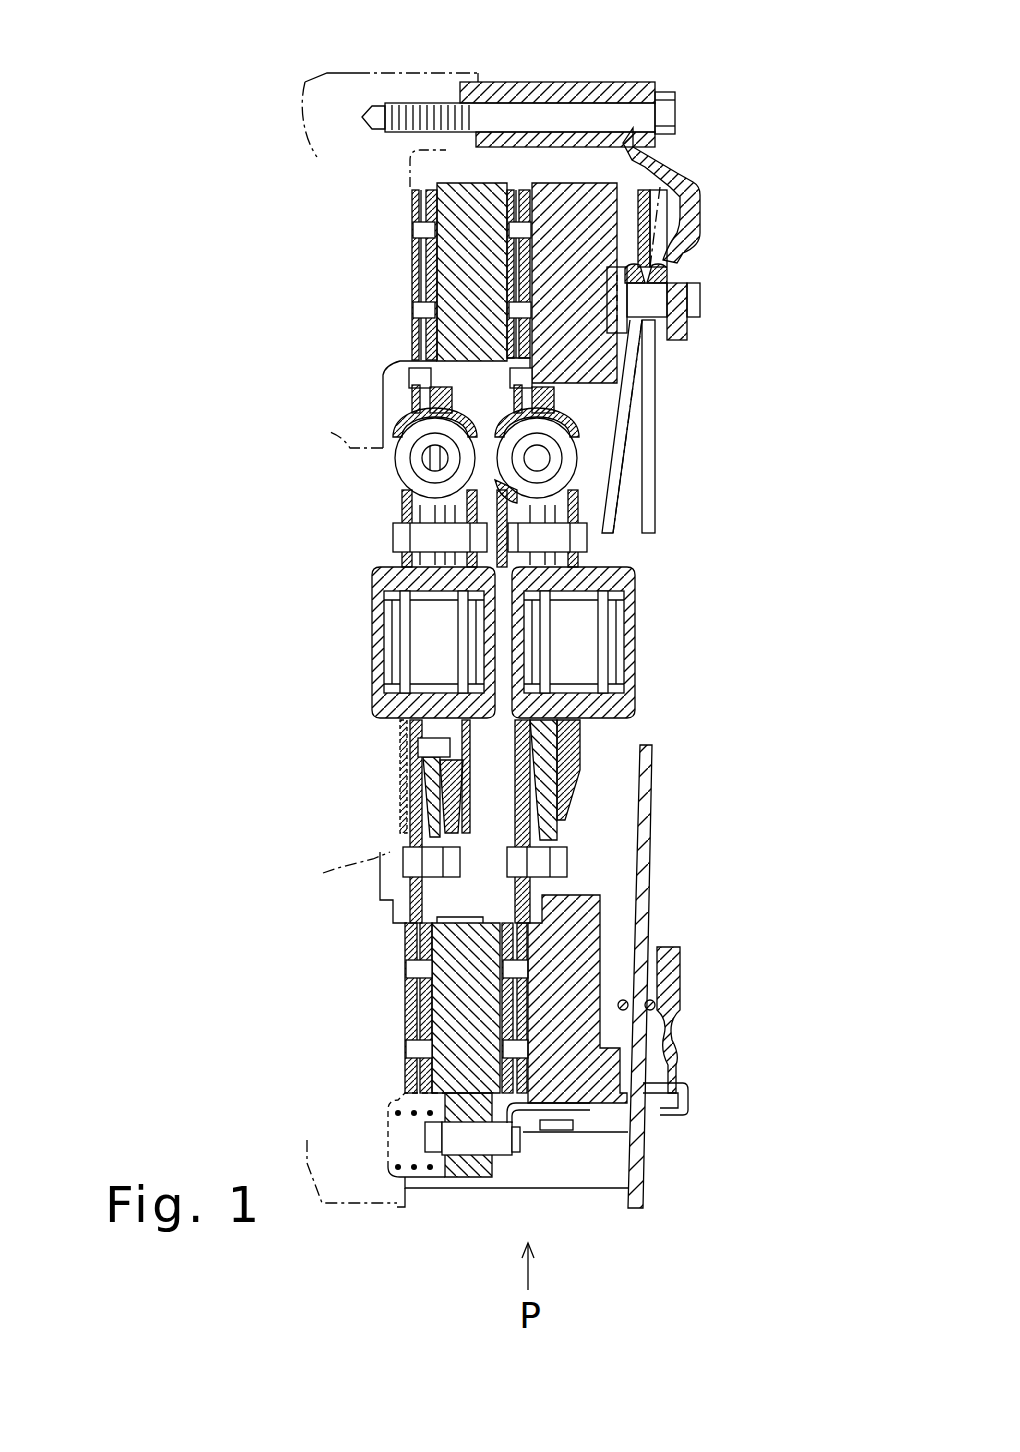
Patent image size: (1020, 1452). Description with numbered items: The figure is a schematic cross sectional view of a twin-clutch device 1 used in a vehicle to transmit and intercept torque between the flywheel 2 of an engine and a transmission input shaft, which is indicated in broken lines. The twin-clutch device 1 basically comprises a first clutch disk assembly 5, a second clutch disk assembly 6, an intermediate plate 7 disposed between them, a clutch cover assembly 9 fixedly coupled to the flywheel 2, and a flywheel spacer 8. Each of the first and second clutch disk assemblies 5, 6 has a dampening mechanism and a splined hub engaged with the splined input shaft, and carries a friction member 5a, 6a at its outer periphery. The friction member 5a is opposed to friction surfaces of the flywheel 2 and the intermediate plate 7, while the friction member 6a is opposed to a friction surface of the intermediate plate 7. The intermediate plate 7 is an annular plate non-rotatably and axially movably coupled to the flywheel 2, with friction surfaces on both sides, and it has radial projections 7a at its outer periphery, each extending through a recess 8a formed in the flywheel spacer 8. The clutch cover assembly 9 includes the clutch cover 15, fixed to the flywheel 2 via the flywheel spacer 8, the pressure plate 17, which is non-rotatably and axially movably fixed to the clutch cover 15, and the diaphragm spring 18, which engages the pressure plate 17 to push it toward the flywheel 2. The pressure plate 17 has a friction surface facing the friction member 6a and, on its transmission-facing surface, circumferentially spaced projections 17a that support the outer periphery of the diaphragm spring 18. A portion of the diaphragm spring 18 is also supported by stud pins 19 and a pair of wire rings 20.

The twin-clutch device 1 is at (718, 80).
The flywheel 2 is at (356, 90).
The first clutch disk assembly 5 is at (388, 476).
The friction member 5a is at (413, 203).
The second clutch disk assembly 6 is at (588, 770).
The friction member 6a is at (527, 185).
The intermediate plate 7 is at (457, 205).
The radial projection 7a is at (470, 1165).
The flywheel spacer 8 is at (541, 92).
The recess 8a is at (598, 1175).
The clutch cover assembly 9 is at (735, 205).
The clutch cover 15 is at (690, 175).
The pressure plate 17 is at (588, 925).
The projection 17a is at (625, 1073).
The diaphragm spring 18 is at (612, 506).
The stud pin 19 is at (698, 308).
The wire ring 20 is at (668, 272).